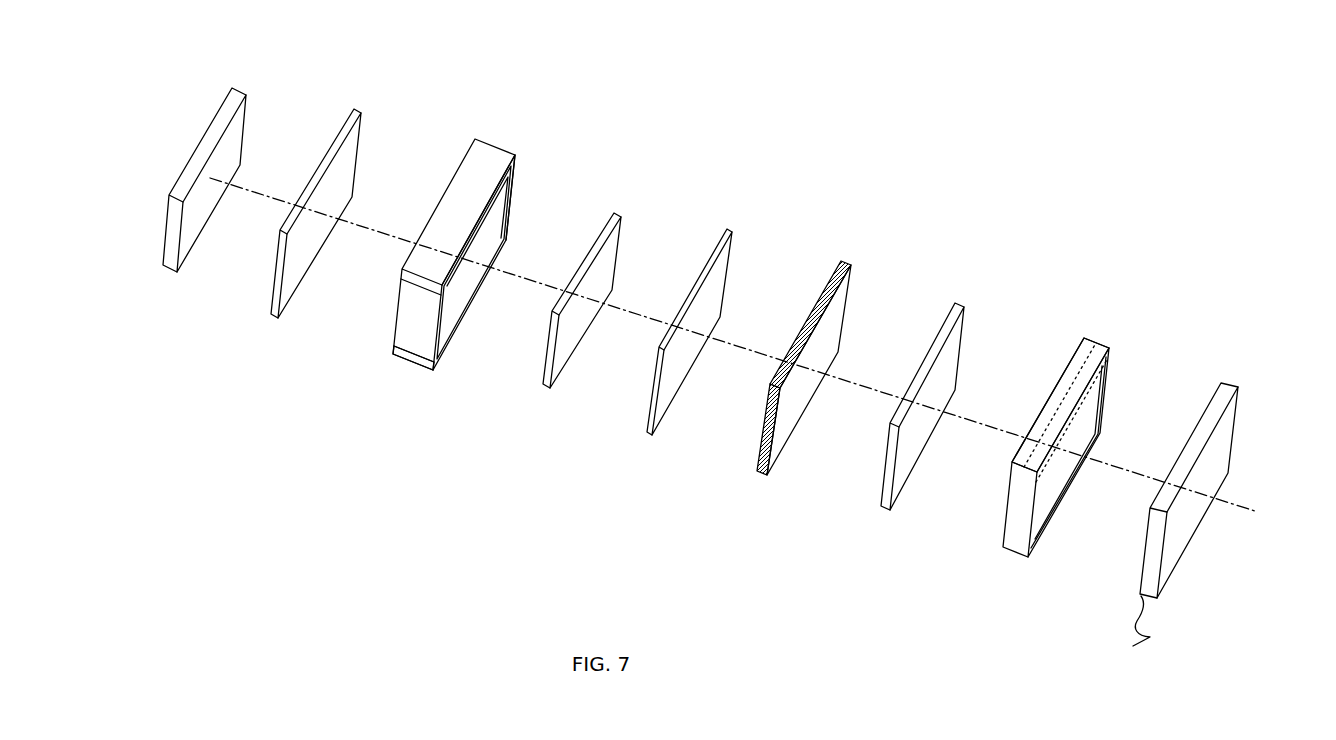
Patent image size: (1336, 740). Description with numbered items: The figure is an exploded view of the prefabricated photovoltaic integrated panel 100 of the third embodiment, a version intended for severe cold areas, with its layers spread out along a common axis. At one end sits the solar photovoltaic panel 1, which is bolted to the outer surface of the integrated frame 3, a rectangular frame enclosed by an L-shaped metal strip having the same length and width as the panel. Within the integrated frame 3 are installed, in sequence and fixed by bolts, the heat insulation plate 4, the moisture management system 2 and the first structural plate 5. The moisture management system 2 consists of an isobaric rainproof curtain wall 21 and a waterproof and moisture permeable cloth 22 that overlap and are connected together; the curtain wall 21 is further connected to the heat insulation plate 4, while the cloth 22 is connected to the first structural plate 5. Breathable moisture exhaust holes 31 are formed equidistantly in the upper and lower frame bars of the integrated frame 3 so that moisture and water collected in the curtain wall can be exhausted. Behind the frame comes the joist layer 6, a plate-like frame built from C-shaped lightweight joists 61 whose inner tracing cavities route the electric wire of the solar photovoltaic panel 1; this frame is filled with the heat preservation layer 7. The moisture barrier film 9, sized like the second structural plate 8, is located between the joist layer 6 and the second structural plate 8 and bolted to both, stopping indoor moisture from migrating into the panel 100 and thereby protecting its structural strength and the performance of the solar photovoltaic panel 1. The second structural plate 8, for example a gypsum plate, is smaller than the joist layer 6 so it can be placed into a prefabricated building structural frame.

The prefabricated photovoltaic integrated panel 100 is at (813, 126).
The solar photovoltaic panel 1 is at (1210, 450).
The moisture management system 2 is at (733, 357).
The isobaric rainproof curtain wall 21 is at (765, 458).
The waterproof and moisture permeable cloth 22 is at (651, 408).
The integrated frame 3 is at (1111, 406).
The breathable moisture exhaust holes 31 is at (1097, 344).
The heat insulation plate 4 is at (962, 328).
The first structural plate 5 is at (607, 253).
The joist layer 6 is at (467, 249).
The joists 61 is at (407, 357).
The heat preservation layer 7 is at (484, 168).
The second structural plate 8 is at (232, 138).
The moisture barrier film 9 is at (350, 154).